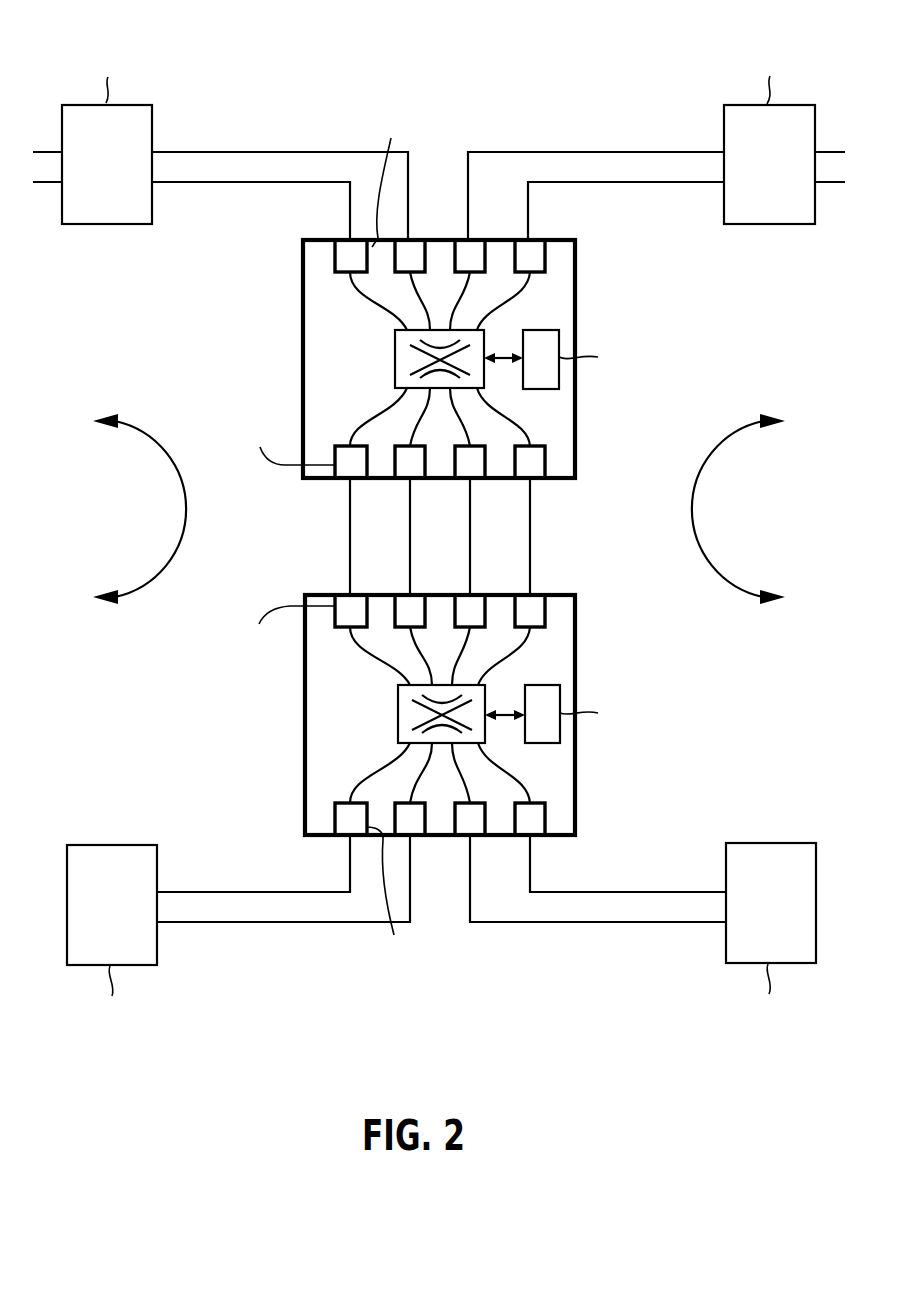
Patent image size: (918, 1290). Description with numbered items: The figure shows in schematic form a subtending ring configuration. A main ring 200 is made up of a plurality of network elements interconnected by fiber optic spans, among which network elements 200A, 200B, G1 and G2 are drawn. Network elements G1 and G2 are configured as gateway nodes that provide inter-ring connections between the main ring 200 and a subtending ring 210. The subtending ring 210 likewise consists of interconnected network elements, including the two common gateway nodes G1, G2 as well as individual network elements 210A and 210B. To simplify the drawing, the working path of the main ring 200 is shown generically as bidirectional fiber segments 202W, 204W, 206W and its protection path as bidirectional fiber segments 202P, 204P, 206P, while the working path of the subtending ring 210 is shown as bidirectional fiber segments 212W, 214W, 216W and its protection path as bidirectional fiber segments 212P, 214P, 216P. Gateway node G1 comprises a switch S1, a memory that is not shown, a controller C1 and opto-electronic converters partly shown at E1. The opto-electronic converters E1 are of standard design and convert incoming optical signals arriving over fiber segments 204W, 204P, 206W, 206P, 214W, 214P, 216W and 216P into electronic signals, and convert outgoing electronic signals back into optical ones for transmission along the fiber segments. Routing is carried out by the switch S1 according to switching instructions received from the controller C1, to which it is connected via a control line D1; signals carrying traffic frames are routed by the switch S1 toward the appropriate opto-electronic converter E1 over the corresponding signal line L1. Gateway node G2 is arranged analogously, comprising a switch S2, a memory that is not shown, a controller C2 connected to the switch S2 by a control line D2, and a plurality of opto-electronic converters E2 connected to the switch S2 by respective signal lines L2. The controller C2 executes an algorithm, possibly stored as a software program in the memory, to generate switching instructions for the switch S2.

The network element 200A is at (133, 181).
The network element 200B is at (139, 920).
The network element 210A is at (797, 181).
The network element 210B is at (798, 920).
The bidirectional fiber segment 202P is at (200, 151).
The bidirectional fiber segment 202W is at (190, 183).
The bidirectional fiber segment 204P is at (410, 560).
The bidirectional fiber segment 204W is at (350, 516).
The bidirectional fiber segment 206P is at (195, 923).
The bidirectional fiber segment 206W is at (243, 873).
The bidirectional fiber segment 212P is at (668, 152).
The bidirectional fiber segment 212W is at (692, 183).
The bidirectional fiber segment 214P is at (470, 562).
The bidirectional fiber segment 214W is at (530, 516).
The bidirectional fiber segment 216P is at (693, 923).
The bidirectional fiber segment 216W is at (670, 892).
The main ring 200 is at (100, 540).
The subtending ring 210 is at (820, 557).
The gateway node G1 is at (305, 703).
The gateway node G2 is at (303, 298).
The switch S1 is at (398, 718).
The switch S2 is at (395, 347).
The controller C1 is at (632, 714).
The controller C2 is at (631, 359).
The opto-electronic converter E1 is at (315, 781).
The opto-electronic converter E2 is at (314, 293).
The signal line L1 is at (362, 651).
The signal line L2 is at (362, 298).
The control line D1 is at (503, 710).
The control line D2 is at (503, 354).